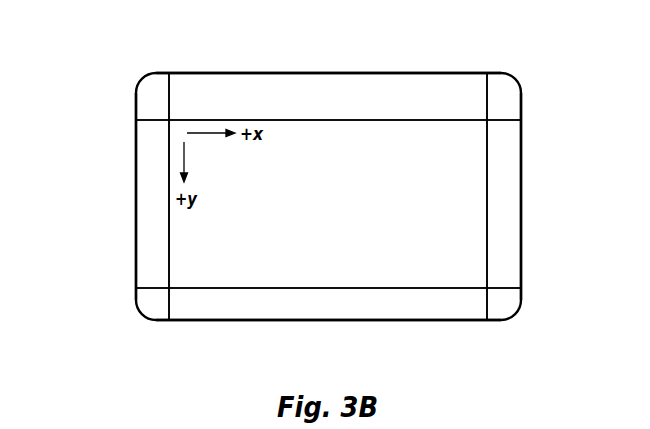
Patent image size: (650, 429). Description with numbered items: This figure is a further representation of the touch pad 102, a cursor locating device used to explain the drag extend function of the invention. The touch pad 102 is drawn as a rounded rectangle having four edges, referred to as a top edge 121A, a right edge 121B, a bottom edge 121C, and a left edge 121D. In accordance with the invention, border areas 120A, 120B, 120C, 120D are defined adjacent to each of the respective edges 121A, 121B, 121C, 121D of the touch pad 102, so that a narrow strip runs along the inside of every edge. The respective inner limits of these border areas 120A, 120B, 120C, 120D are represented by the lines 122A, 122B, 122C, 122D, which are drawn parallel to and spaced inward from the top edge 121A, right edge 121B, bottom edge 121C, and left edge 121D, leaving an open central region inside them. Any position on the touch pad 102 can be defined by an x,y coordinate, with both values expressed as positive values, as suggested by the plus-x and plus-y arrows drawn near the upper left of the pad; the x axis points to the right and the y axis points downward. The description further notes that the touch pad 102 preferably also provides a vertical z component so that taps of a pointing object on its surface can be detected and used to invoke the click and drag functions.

The touch pad 102 is at (437, 320).
The border area 120A is at (322, 112).
The border area 120B is at (510, 192).
The border area 120C is at (308, 293).
The border area 120D is at (160, 202).
The top edge 121A is at (183, 73).
The right edge 121B is at (523, 150).
The bottom edge 121C is at (248, 320).
The left edge 121D is at (137, 157).
The line 122A is at (403, 121).
The line 122B is at (490, 263).
The line 122C is at (240, 288).
The line 122D is at (170, 272).